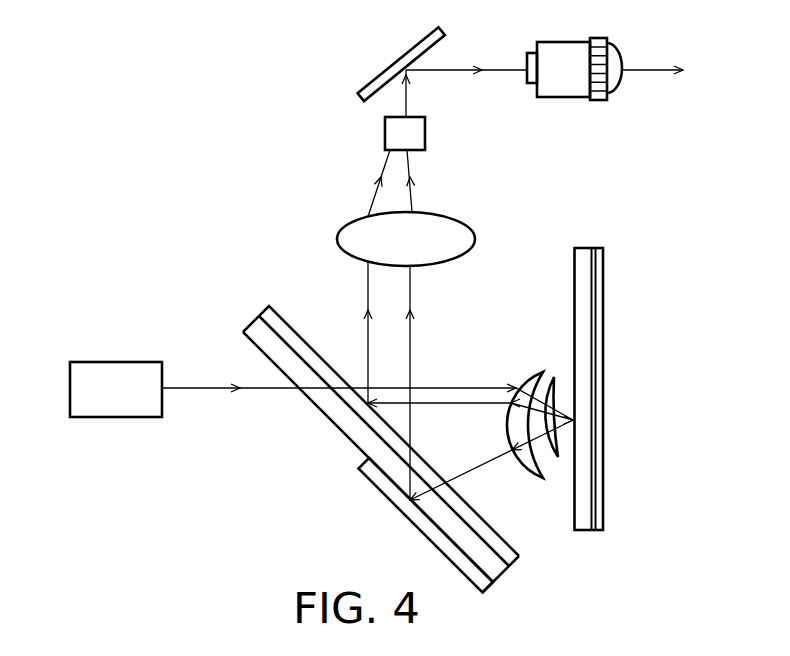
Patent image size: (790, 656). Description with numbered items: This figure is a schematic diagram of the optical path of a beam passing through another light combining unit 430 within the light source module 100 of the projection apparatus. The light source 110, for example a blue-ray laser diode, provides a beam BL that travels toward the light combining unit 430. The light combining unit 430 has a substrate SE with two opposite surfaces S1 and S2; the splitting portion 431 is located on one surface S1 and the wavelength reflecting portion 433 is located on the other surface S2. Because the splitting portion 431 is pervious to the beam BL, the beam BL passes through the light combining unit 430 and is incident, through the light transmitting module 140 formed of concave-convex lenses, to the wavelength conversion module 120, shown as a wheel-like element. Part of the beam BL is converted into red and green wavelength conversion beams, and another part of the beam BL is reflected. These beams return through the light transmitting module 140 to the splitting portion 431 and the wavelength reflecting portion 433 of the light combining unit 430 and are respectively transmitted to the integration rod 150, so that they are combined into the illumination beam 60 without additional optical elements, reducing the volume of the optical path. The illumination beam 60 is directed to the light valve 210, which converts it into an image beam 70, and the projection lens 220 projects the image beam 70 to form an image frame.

The light source module 100 is at (687, 602).
The light source 110 is at (113, 408).
The wavelength conversion module 120 is at (588, 237).
The light transmitting module 140 is at (555, 377).
The integration rod 150 is at (392, 133).
The light valve 210 is at (416, 51).
The projection lens 220 is at (568, 50).
The illumination beam 60 is at (407, 95).
The image beam 70 is at (504, 68).
The light combining unit 430 is at (392, 430).
The splitting portion 431 is at (412, 426).
The wavelength reflecting portion 433 is at (462, 566).
The first surface S1 is at (282, 335).
The second surface S2 is at (327, 417).
The substrate SE is at (498, 570).
The beam BL is at (201, 390).